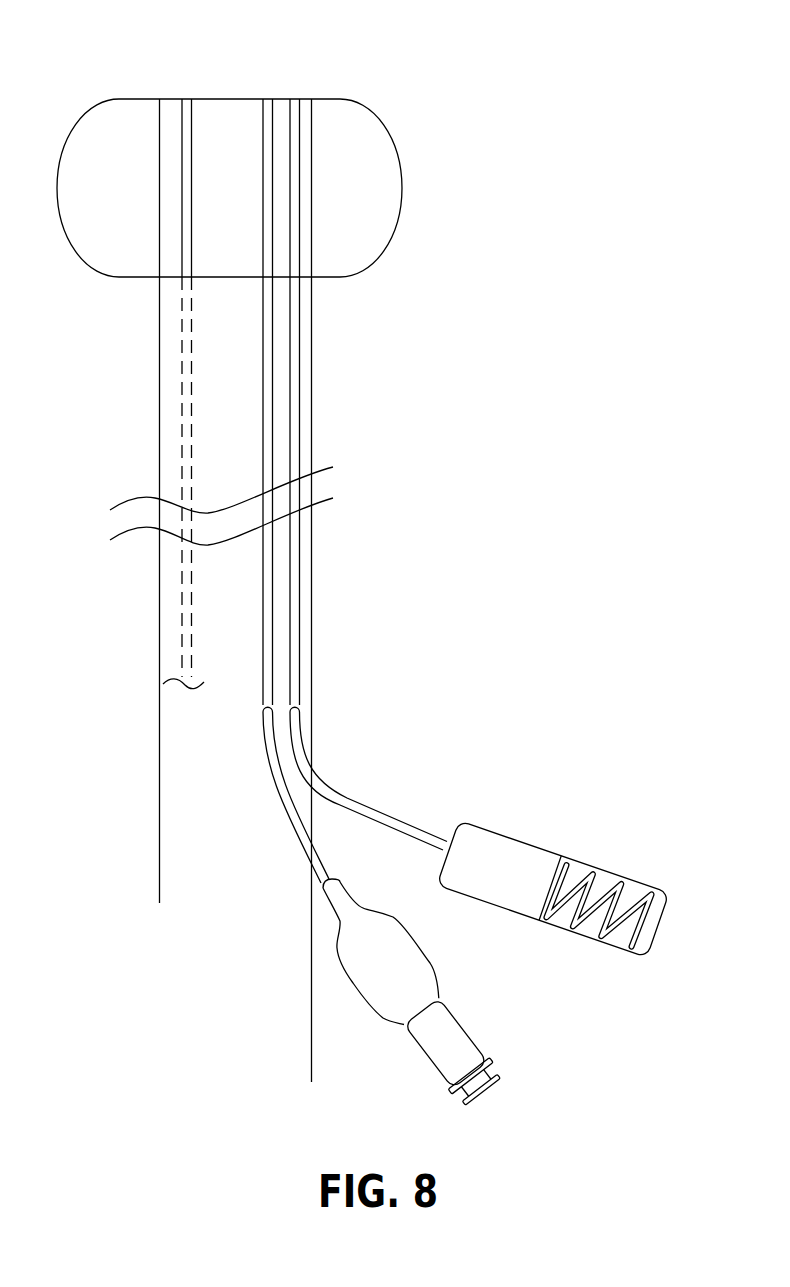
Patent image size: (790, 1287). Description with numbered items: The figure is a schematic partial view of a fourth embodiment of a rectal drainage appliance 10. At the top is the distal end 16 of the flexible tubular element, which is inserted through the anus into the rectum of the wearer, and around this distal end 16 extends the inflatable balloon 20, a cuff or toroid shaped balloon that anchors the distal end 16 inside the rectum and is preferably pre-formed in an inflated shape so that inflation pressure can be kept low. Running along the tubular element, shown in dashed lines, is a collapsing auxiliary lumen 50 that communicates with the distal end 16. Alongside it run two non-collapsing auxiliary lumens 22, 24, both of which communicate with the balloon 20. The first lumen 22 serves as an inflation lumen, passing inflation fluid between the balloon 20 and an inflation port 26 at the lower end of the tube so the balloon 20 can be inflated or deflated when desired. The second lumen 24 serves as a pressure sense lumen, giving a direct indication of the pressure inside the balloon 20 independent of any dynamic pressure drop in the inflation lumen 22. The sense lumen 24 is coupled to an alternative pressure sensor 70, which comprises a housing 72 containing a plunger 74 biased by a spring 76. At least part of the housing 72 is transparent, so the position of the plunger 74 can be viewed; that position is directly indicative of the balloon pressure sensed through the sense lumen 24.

The rectal drainage appliance 10 is at (527, 372).
The distal end 16 is at (234, 82).
The inflatable balloon 20 is at (368, 220).
The first auxiliary lumen 22 is at (265, 630).
The second auxiliary lumen 24 is at (297, 592).
The inflation port 26 is at (420, 988).
The collapsing auxiliary lumen 50 is at (187, 448).
The pressure sensor 70 is at (553, 857).
The housing 72 is at (553, 931).
The plunger 74 is at (499, 870).
The spring 76 is at (633, 960).